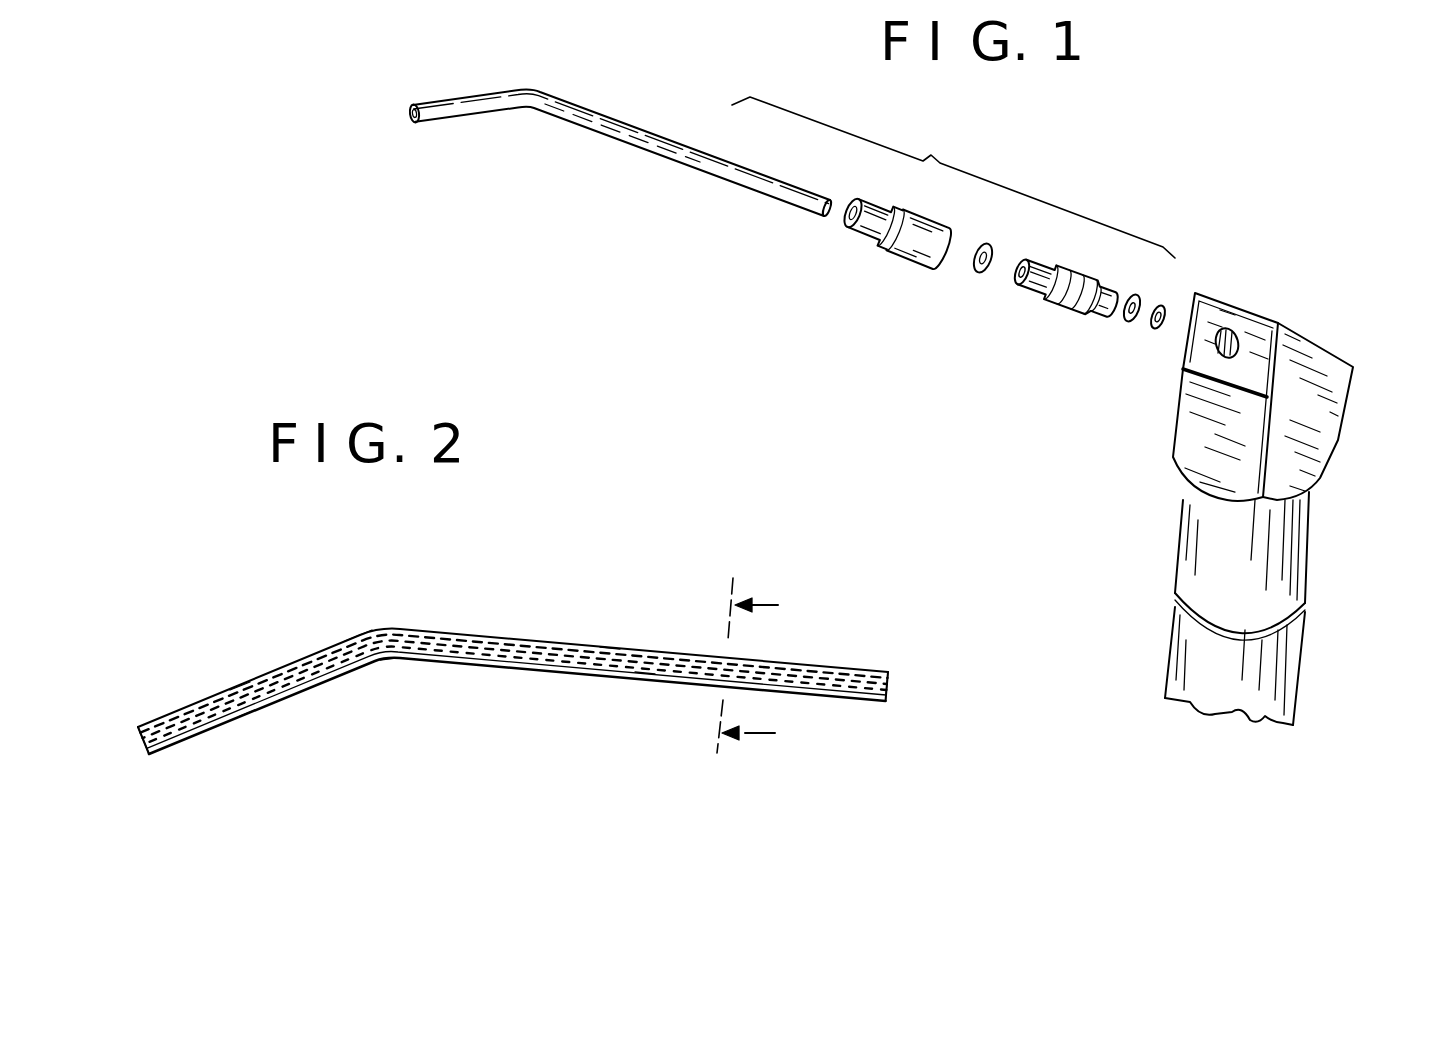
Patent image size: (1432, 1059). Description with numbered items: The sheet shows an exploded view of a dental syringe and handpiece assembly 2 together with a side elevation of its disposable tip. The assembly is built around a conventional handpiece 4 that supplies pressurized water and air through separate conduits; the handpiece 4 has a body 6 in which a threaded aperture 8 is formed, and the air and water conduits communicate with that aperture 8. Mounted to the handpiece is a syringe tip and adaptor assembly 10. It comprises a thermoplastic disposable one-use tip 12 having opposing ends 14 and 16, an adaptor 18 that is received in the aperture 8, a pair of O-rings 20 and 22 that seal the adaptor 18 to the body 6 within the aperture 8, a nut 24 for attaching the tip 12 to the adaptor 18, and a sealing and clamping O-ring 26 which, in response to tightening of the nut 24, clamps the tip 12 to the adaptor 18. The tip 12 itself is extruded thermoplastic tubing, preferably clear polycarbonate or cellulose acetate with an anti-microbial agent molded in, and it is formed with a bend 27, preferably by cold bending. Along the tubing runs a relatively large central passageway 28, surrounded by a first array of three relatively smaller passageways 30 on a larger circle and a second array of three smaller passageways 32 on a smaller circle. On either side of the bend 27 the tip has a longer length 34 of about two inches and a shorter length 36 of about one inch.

In FIG. 1, the syringe and handpiece assembly 2 is at (1224, 180).
In FIG. 1, the handpiece 4 is at (1310, 410).
In FIG. 2, the handpiece 4 is at (761, 666).
In FIG. 1, the body 6 is at (1323, 343).
In FIG. 1, the threaded aperture 8 is at (1232, 332).
In FIG. 1, the syringe tip and adaptor assembly 10 is at (953, 177).
In FIG. 1, the tip 12 is at (630, 120).
In FIG. 2, the tip 12 is at (448, 592).
In FIG. 1, the end 14 is at (410, 118).
In FIG. 2, the end 14 is at (144, 749).
In FIG. 1, the end 16 is at (829, 208).
In FIG. 2, the end 16 is at (889, 688).
In FIG. 1, the adaptor 18 is at (1082, 237).
In FIG. 1, the O-ring 20 is at (1131, 322).
In FIG. 1, the O-ring 22 is at (1161, 330).
In FIG. 1, the nut 24 is at (920, 254).
In FIG. 1, the sealing and clamping O-ring 26 is at (983, 273).
In FIG. 2, the bend 27 is at (390, 660).
In FIG. 2, the central passageway 28 is at (347, 648).
In FIG. 2, the first array of passageways 30 is at (247, 713).
In FIG. 2, the second array of passageways 32 is at (608, 650).
In FIG. 2, the longer length 34 is at (643, 673).
In FIG. 2, the shorter length 36 is at (237, 688).